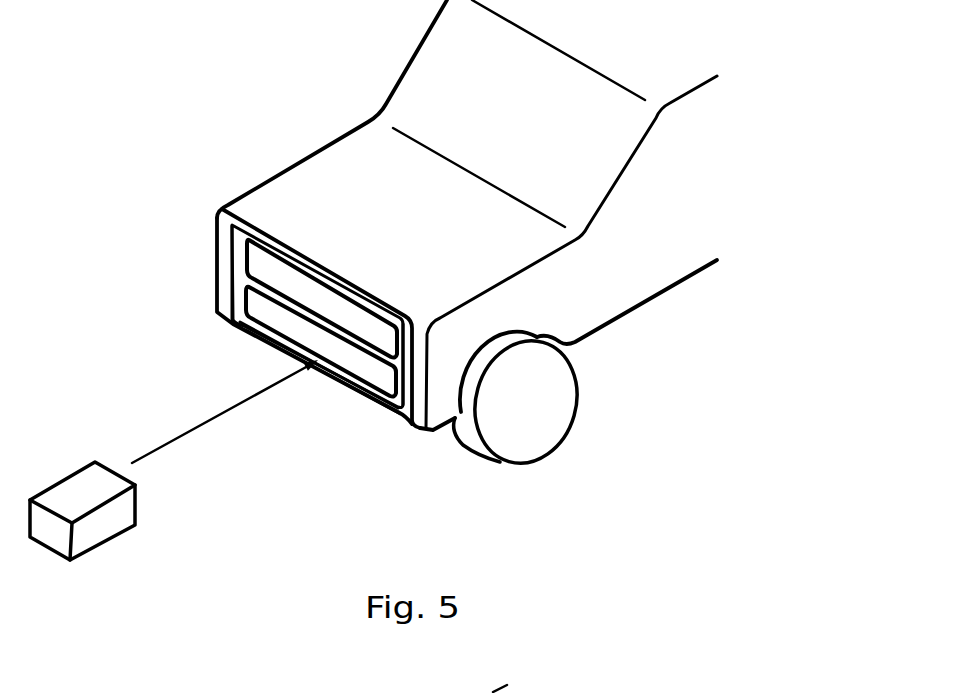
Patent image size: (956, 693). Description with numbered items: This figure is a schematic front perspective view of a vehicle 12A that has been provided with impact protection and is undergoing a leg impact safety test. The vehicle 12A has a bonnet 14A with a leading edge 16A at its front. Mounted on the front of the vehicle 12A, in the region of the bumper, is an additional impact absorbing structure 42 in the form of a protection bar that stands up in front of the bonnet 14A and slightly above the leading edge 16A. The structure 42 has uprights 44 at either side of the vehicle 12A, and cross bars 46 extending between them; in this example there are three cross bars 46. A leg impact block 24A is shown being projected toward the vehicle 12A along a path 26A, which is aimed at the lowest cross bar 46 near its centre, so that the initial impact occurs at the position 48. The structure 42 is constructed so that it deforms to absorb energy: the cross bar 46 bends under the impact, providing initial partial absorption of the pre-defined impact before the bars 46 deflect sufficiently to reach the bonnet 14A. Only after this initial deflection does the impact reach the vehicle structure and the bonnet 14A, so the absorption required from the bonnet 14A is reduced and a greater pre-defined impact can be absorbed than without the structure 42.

The vehicle 12A is at (148, 274).
The bonnet 14A is at (342, 157).
The leading edge 16A is at (417, 323).
The impact absorbing structure 42 is at (226, 248).
The uprights 44 is at (217, 295).
The cross bars 46 is at (358, 366).
The position 48 is at (318, 366).
The path 26A is at (212, 420).
The leg impact block 24A is at (103, 530).